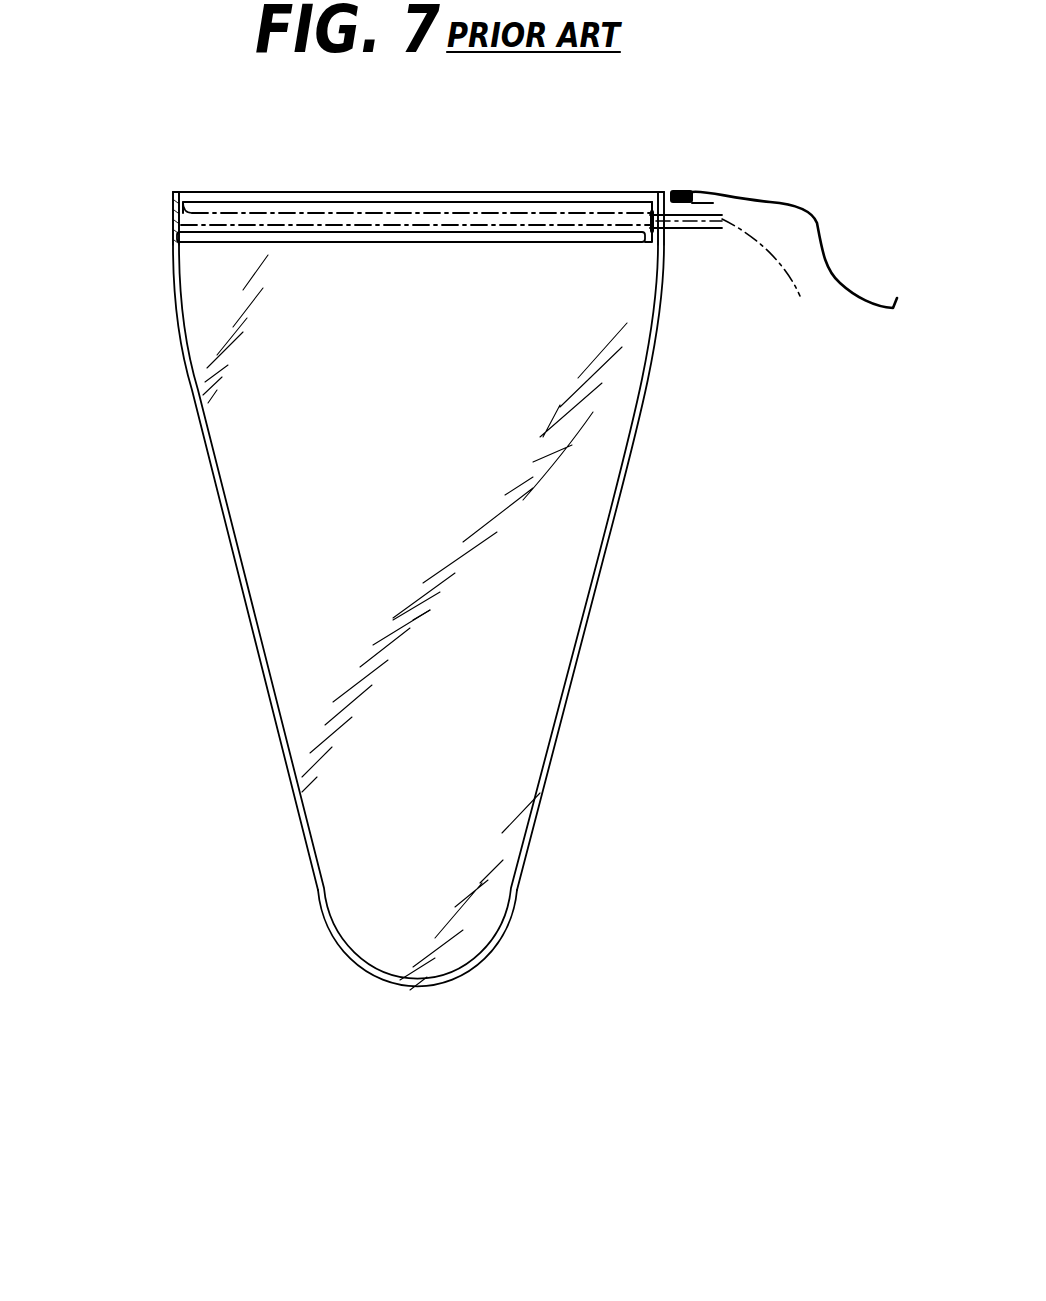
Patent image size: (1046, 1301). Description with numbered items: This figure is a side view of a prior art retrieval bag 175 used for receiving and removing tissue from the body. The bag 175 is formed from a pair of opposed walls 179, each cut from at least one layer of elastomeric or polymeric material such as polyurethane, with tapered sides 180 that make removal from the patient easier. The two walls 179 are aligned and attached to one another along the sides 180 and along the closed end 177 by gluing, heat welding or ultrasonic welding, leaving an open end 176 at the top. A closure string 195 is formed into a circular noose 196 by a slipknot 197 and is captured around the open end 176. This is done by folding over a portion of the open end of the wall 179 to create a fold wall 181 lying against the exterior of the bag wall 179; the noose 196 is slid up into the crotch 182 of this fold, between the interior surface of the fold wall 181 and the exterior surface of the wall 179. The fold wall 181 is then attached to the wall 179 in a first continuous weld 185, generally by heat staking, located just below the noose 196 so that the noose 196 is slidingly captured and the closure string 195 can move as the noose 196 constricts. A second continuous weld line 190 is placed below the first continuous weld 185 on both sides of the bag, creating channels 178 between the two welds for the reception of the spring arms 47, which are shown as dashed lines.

The prior art retrieval bag 175 is at (185, 829).
The open end 176 is at (240, 192).
The closed end 177 is at (397, 997).
The channels 178 is at (660, 228).
The walls 179 is at (552, 623).
The sides 180 is at (222, 515).
The fold wall 181 is at (233, 243).
The crotch 182 is at (183, 204).
The first continuous weld 185 is at (589, 202).
The second continuous weld line 190 is at (598, 245).
The closure string 195 is at (817, 223).
The noose 196 is at (648, 196).
The slipknot 197 is at (692, 190).
The spring arms 47 is at (778, 271).